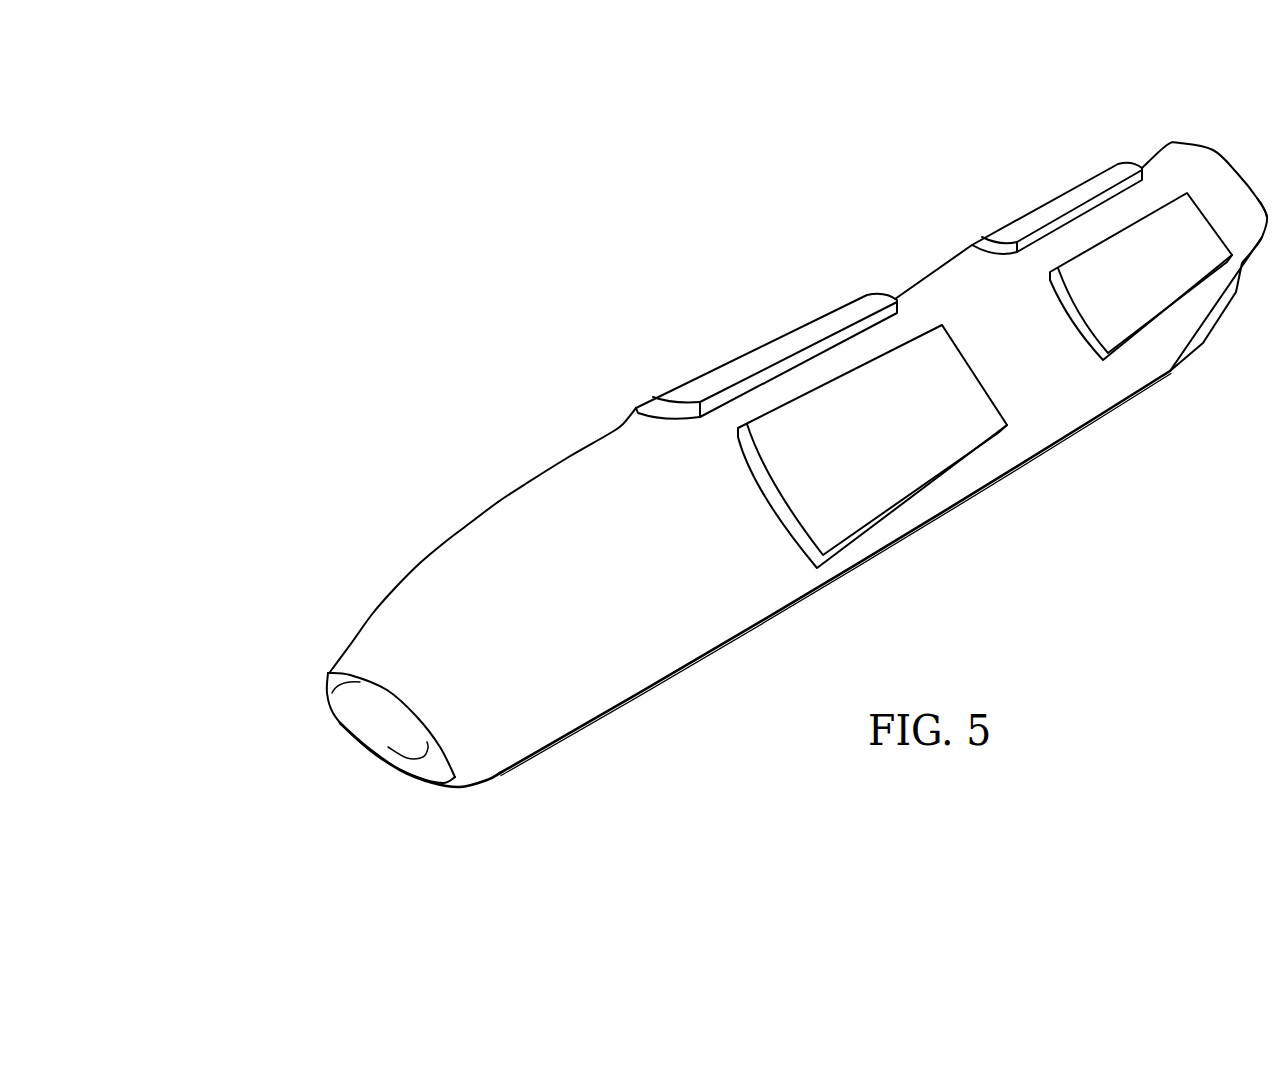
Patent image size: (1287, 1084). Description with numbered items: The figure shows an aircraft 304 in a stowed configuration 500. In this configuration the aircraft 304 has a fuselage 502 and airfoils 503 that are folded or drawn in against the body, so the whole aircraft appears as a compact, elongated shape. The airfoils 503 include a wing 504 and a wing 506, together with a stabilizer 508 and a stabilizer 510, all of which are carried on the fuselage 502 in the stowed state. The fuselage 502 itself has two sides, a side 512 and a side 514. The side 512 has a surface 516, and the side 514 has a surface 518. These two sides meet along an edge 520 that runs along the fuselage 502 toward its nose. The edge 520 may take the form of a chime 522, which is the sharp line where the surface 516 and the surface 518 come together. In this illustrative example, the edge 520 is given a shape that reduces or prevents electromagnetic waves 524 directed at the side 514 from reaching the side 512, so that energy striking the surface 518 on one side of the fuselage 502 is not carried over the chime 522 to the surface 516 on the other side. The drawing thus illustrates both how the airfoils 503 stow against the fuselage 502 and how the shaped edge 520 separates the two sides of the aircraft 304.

The stowed configuration 500 is at (528, 286).
The aircraft 304 is at (1218, 146).
The fuselage 502 is at (720, 627).
The airfoils 503 is at (630, 727).
The wing 504 is at (755, 352).
The wing 506 is at (908, 445).
The stabilizer 508 is at (1048, 208).
The stabilizer 510 is at (1171, 285).
The side 512 is at (492, 507).
The side 514 is at (443, 783).
The surface 516 is at (607, 448).
The surface 518 is at (422, 768).
The edge 520 is at (314, 668).
The chime 522 is at (330, 670).
The electromagnetic waves 524 is at (330, 753).